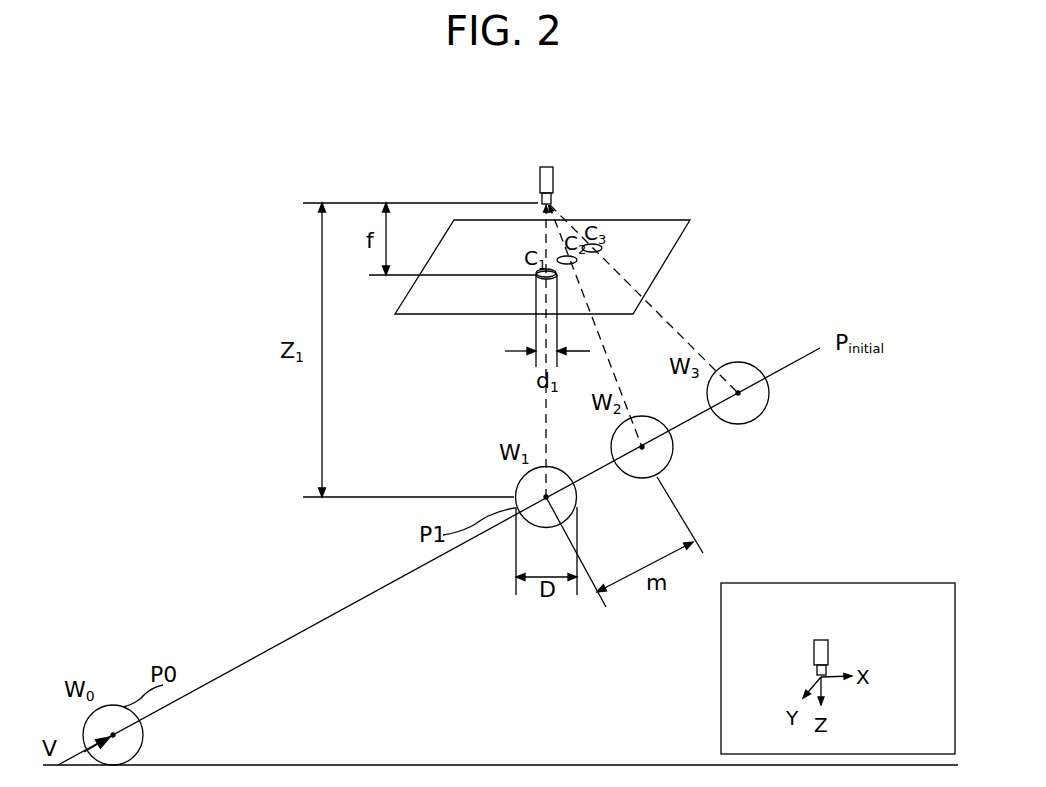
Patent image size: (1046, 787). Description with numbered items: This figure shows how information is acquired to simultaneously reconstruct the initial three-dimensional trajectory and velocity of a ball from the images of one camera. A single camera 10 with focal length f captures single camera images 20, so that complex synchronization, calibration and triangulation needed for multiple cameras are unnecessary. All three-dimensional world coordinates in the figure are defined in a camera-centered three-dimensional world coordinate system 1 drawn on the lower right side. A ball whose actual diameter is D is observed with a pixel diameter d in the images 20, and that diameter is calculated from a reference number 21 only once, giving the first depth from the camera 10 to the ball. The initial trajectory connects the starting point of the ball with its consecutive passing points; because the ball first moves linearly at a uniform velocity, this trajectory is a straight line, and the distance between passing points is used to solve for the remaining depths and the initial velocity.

The camera-centered 3D world coordinate system 1 is at (837, 582).
The single camera 10 is at (553, 177).
The single camera images 20 is at (677, 242).
The reference number 21 is at (535, 283).